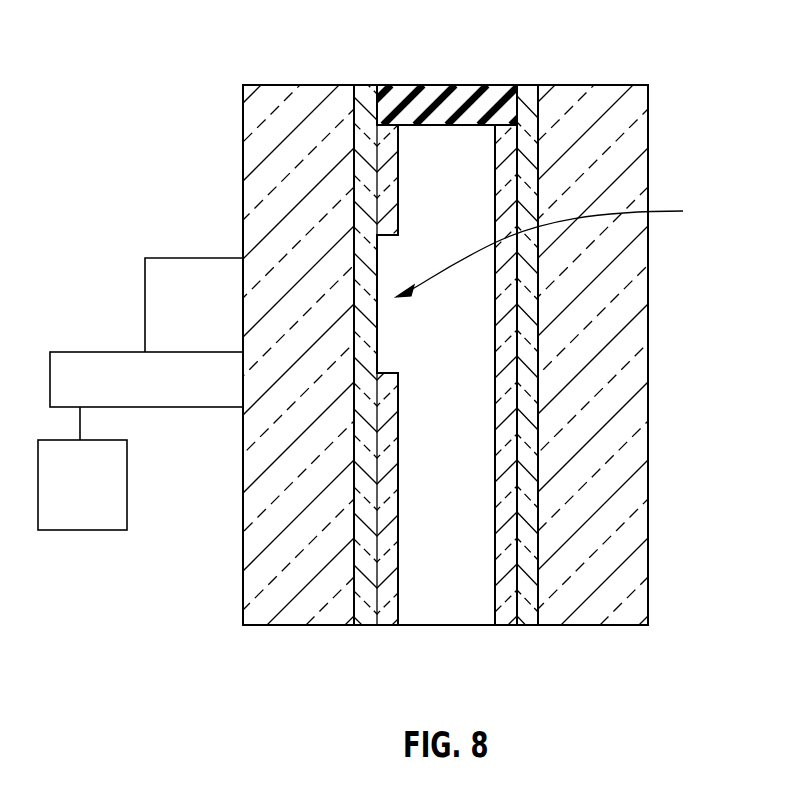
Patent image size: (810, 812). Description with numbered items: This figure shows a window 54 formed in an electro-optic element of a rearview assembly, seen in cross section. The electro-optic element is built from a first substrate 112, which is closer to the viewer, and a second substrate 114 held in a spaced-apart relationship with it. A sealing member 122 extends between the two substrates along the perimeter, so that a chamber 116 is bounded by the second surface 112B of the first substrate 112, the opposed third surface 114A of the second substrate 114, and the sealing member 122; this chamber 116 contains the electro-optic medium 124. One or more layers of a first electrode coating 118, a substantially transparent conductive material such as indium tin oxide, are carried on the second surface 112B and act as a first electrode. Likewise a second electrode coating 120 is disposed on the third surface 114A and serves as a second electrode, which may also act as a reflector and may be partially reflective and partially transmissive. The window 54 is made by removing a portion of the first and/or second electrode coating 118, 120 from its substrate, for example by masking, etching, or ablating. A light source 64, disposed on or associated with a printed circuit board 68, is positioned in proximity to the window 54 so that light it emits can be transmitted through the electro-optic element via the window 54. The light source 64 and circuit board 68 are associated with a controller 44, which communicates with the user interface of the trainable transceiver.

The controller 44 is at (82, 468).
The window 54 is at (554, 248).
The light source 64 is at (158, 303).
The printed circuit board 68 is at (146, 379).
The first substrate 112 is at (608, 100).
The second surface 112B is at (527, 100).
The second substrate 114 is at (333, 105).
The third surface 114A is at (370, 575).
The chamber 116 is at (484, 416).
The first electrode coating 118 is at (538, 632).
The second electrode coating 120 is at (398, 632).
The sealing member 122 is at (448, 105).
The electro-optic medium 124 is at (458, 612).